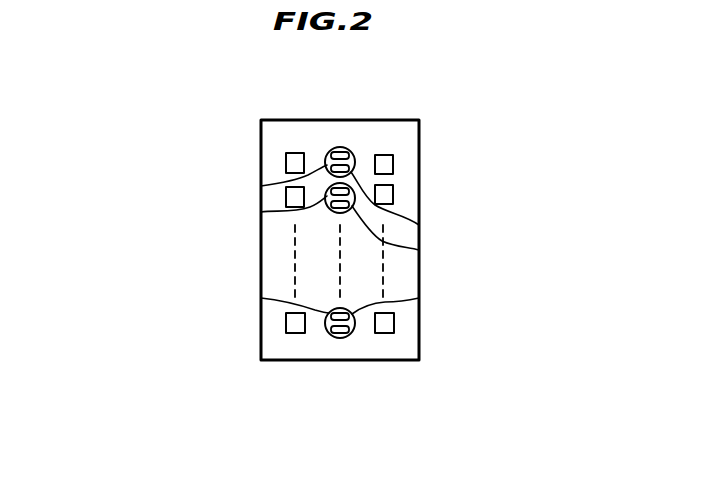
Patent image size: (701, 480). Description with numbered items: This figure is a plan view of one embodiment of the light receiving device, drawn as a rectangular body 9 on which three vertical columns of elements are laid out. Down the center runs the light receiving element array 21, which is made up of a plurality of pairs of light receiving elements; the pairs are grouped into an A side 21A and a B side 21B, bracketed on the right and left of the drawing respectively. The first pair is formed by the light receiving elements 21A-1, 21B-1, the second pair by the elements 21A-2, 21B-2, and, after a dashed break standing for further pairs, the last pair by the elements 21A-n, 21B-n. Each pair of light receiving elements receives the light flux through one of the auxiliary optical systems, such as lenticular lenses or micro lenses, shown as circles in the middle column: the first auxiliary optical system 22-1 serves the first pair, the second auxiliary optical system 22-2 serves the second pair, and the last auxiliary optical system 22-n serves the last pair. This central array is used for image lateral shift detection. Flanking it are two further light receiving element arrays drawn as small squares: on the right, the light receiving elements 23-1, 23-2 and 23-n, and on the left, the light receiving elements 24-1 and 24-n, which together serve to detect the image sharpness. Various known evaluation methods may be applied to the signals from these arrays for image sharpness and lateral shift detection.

The semiconductor chip / package body 9 is at (387, 120).
The light receiving element array 21 is at (533, 12).
The light receiving elements 21A is at (467, 283).
The light receiving elements 21B is at (140, 167).
The light receiving element 21A-1 is at (419, 225).
The light receiving element 21A-2 is at (419, 250).
The light receiving element 21A-n is at (419, 298).
The light receiving element 21B-1 is at (261, 186).
The light receiving element 21B-2 is at (261, 212).
The light receiving element 21B-n is at (261, 298).
The auxiliary optical system 22-1 is at (345, 148).
The auxiliary optical system 22-2 is at (330, 211).
The auxiliary optical system 22-n is at (345, 338).
The light receiving element 23-1 is at (393, 164).
The light receiving element 23-2 is at (393, 194).
The light receiving element 23-n is at (394, 324).
The light receiving element 24-1 is at (290, 153).
The light receiving element 24-n is at (296, 333).